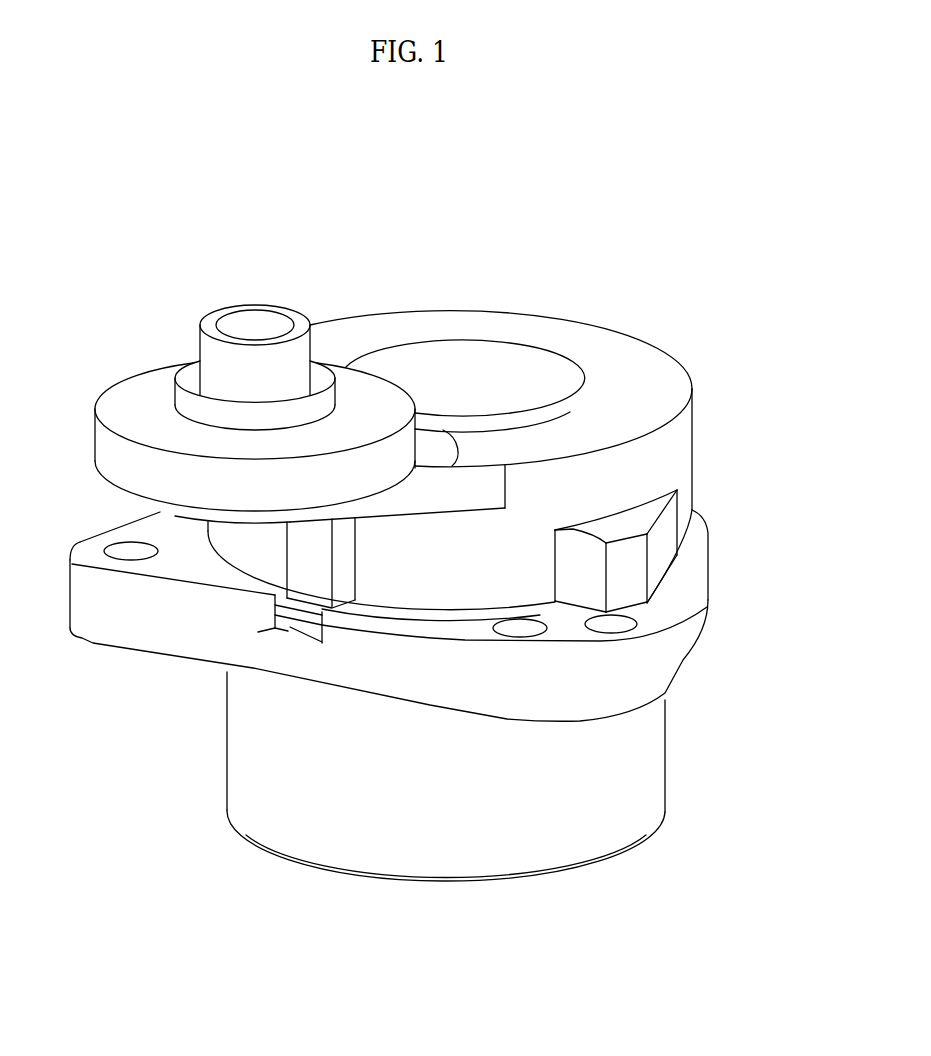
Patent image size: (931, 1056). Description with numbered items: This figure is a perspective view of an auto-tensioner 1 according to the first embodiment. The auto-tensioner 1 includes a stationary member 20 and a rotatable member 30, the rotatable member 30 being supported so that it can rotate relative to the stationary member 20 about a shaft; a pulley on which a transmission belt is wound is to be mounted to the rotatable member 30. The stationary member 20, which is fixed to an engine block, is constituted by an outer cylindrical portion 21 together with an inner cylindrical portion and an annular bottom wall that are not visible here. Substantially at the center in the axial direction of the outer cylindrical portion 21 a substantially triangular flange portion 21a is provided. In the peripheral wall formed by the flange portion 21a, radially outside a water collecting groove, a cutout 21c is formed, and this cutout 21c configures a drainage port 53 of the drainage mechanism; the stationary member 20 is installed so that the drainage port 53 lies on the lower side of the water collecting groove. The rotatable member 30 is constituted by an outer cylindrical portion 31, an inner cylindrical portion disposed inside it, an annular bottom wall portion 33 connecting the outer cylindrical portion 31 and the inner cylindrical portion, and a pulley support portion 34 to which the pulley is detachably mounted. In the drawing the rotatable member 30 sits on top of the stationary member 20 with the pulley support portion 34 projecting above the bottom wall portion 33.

The auto-tensioner 1 is at (135, 203).
The stationary member 20 is at (548, 900).
The outer cylindrical portion 21 is at (652, 745).
The flange portion 21a is at (692, 612).
The cutout 21c is at (270, 632).
The rotatable member 30 is at (505, 282).
The outer cylindrical portion 31 is at (678, 458).
The annular bottom wall portion 33 is at (625, 375).
The pulley support portion 34 is at (137, 388).
The drainage port 53 is at (305, 637).